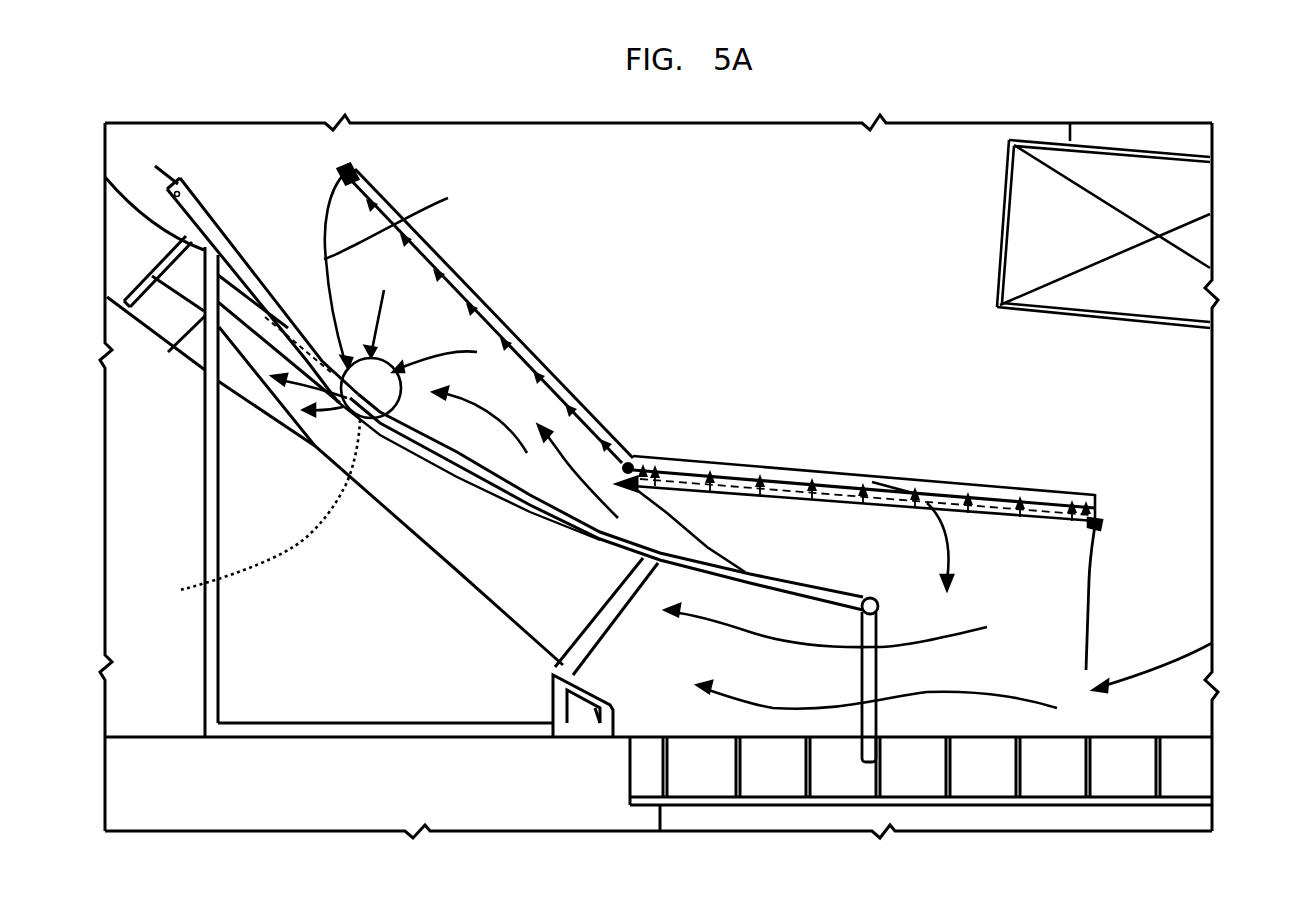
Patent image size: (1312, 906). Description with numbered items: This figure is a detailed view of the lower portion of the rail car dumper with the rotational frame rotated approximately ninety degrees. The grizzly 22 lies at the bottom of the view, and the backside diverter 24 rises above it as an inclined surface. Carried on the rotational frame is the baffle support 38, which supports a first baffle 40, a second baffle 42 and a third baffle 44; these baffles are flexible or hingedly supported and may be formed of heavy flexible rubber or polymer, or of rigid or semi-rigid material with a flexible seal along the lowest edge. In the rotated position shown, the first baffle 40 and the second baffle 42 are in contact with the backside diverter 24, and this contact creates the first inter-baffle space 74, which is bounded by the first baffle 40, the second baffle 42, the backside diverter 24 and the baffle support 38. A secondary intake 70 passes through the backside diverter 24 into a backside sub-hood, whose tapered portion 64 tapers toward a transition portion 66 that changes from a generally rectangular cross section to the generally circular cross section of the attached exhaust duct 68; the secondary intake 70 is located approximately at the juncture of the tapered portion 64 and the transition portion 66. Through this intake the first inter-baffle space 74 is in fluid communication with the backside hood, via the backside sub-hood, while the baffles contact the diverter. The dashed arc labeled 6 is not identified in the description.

The swing path of chute 6 is at (208, 578).
The grizzly 22 is at (1193, 773).
The backside diverter 24 is at (207, 207).
The baffle support 38 is at (592, 404).
The first baffle 40 is at (420, 203).
The second baffle 42 is at (698, 538).
The third baffle 44 is at (1091, 595).
The tapered portion 64 is at (437, 558).
The transition portion 66 is at (243, 402).
The exhaust duct 68 is at (147, 334).
The secondary intake 70 is at (403, 386).
The first inter-baffle space 74 is at (516, 474).